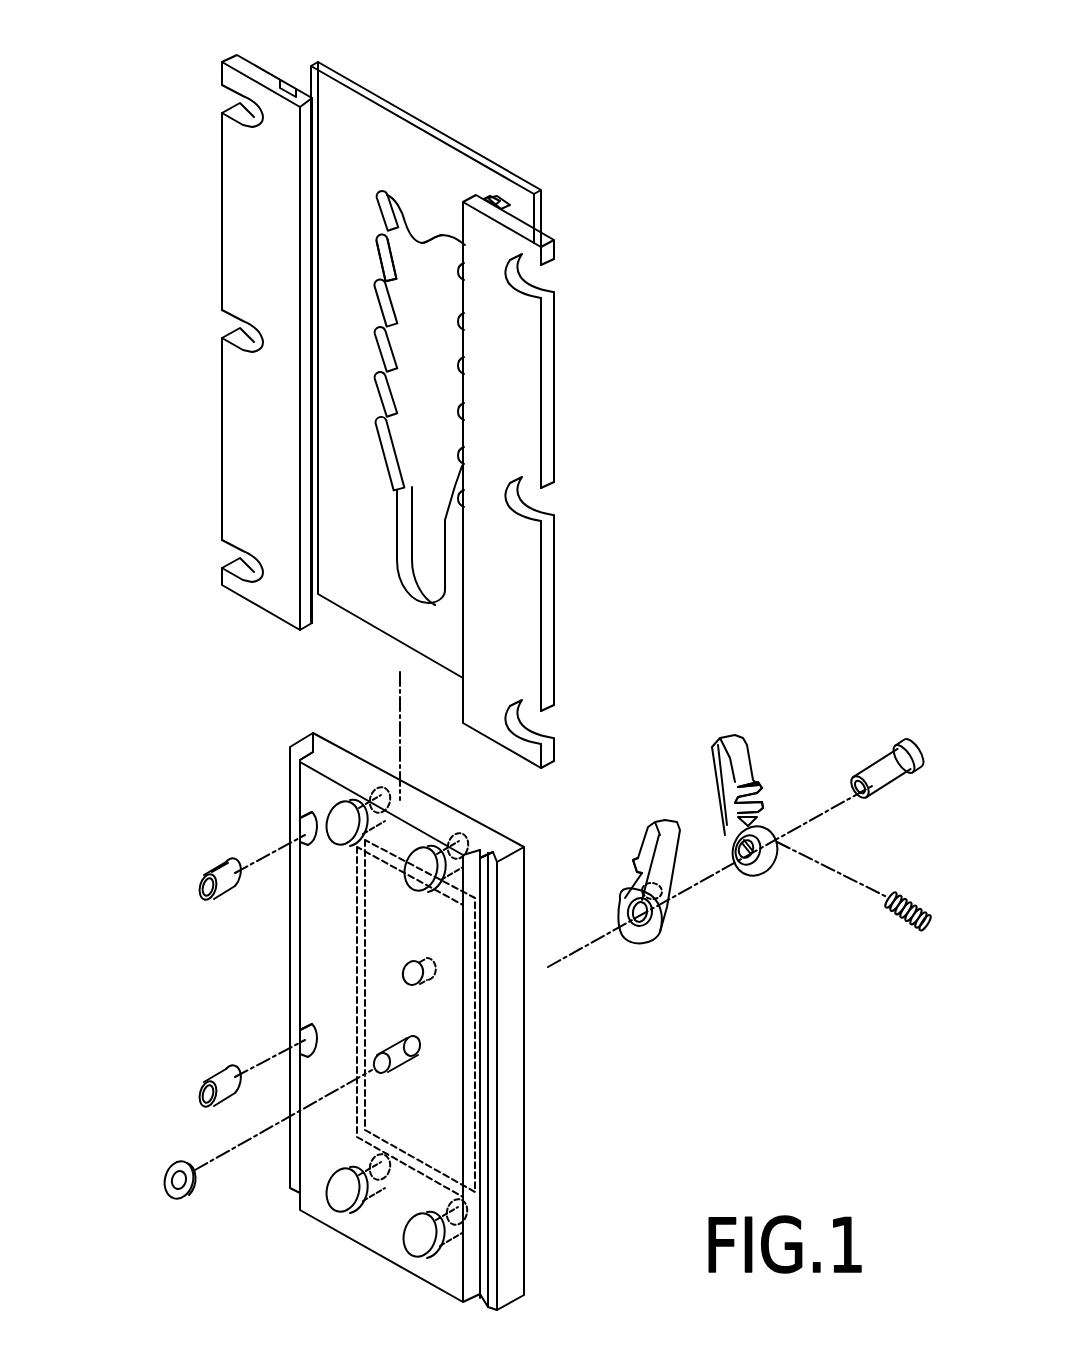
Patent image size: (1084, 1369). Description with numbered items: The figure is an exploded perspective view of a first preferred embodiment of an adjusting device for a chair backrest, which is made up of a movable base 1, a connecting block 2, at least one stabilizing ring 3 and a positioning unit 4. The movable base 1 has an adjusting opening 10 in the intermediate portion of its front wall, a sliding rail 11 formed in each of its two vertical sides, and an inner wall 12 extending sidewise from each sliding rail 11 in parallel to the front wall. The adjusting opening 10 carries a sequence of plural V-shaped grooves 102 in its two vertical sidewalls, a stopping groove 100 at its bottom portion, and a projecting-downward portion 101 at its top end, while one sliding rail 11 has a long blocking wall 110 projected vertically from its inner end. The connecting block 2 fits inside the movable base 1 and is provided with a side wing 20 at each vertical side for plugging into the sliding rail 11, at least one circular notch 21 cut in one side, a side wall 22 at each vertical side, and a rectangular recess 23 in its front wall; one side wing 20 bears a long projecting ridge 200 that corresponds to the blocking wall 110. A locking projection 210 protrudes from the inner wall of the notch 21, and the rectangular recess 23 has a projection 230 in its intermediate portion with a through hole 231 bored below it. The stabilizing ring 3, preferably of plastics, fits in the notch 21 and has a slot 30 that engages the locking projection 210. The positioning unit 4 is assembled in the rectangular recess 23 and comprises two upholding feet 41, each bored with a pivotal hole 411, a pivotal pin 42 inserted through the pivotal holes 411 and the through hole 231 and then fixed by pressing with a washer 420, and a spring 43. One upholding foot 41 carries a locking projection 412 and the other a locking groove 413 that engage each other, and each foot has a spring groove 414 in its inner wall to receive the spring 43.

The movable base 1 is at (448, 133).
The adjusting opening 10 is at (438, 393).
The stopping groove 100 is at (432, 606).
The projecting-downward portion 101 is at (425, 244).
The V-shaped grooves 102 is at (375, 242).
The sliding rail 11 is at (300, 70).
The blocking wall 110 is at (494, 201).
The inner wall 12 is at (305, 135).
The connecting block 2 is at (425, 813).
The side wing 20 is at (297, 968).
The projecting ridge 200 is at (492, 1247).
The circular notch 21 is at (306, 828).
The locking projection 210 is at (305, 823).
The side wall 22 is at (300, 763).
The rectangular recess 23 is at (470, 1160).
The projection 230 is at (425, 985).
The through hole 231 is at (378, 1075).
The stabilizing ring 3 is at (200, 890).
The slot 30 is at (205, 880).
The positioning unit 4 is at (809, 690).
The upholding feet 41 is at (688, 862).
The pivotal hole 411 is at (623, 905).
The locking projection 412 is at (634, 863).
The locking groove 413 is at (769, 783).
The spring groove 414 is at (763, 827).
The pivotal pin 42 is at (877, 757).
The washer 420 is at (167, 1194).
The spring 43 is at (905, 901).